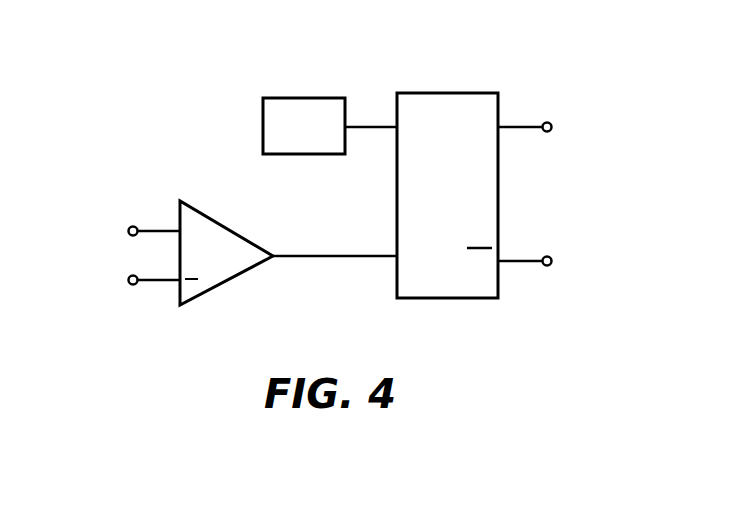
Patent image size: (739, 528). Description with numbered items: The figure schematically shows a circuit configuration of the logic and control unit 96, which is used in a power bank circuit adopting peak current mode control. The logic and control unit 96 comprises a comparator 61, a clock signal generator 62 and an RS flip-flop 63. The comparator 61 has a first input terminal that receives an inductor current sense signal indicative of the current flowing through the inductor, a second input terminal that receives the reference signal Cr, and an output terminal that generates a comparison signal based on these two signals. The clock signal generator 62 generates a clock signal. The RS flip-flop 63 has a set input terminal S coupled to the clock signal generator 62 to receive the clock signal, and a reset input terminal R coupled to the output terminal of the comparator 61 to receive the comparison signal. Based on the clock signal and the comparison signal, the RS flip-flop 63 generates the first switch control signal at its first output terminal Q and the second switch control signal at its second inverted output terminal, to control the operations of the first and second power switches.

The logic and control unit 96 is at (141, 122).
The comparator 61 is at (226, 253).
The clock signal generator 62 is at (304, 126).
The RS flip-flop 63 is at (447, 195).